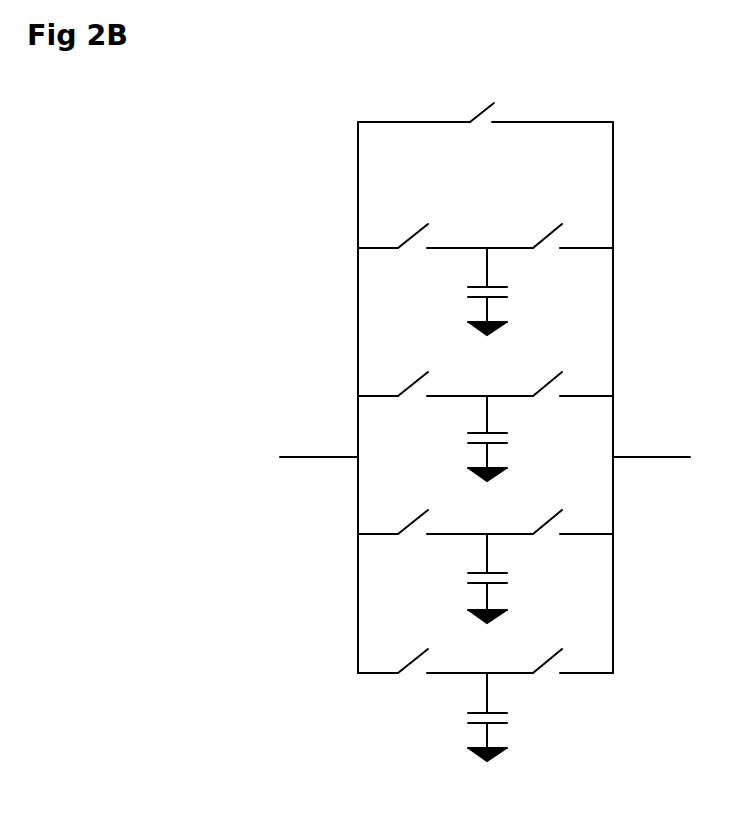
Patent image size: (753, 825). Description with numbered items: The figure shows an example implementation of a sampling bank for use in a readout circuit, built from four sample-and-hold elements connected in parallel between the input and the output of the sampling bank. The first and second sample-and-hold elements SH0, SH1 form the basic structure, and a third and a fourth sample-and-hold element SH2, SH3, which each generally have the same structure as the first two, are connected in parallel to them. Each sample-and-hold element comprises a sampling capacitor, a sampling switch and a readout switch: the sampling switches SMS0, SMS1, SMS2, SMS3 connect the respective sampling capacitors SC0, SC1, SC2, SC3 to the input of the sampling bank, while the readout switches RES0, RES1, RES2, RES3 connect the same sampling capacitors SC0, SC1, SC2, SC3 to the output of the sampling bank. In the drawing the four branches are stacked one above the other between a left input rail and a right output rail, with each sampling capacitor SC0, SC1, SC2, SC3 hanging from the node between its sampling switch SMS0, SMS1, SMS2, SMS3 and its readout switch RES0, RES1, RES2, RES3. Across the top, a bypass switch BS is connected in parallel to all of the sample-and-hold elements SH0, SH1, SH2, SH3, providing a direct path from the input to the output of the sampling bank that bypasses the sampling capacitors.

The bypass switch BS is at (485, 95).
The first sample-and-hold element SH0 is at (338, 248).
The second sample-and-hold element SH1 is at (338, 396).
The third sample-and-hold element SH2 is at (338, 534).
The fourth sample-and-hold element SH3 is at (338, 673).
The sampling switch SMS0 is at (422, 258).
The sampling switch SMS1 is at (422, 404).
The sampling switch SMS2 is at (422, 542).
The sampling switch SMS3 is at (422, 684).
The readout switch RES0 is at (550, 258).
The readout switch RES1 is at (550, 404).
The readout switch RES2 is at (550, 542).
The readout switch RES3 is at (550, 684).
The sampling capacitor SC0 is at (452, 297).
The sampling capacitor SC1 is at (452, 445).
The sampling capacitor SC2 is at (452, 583).
The sampling capacitor SC3 is at (452, 722).